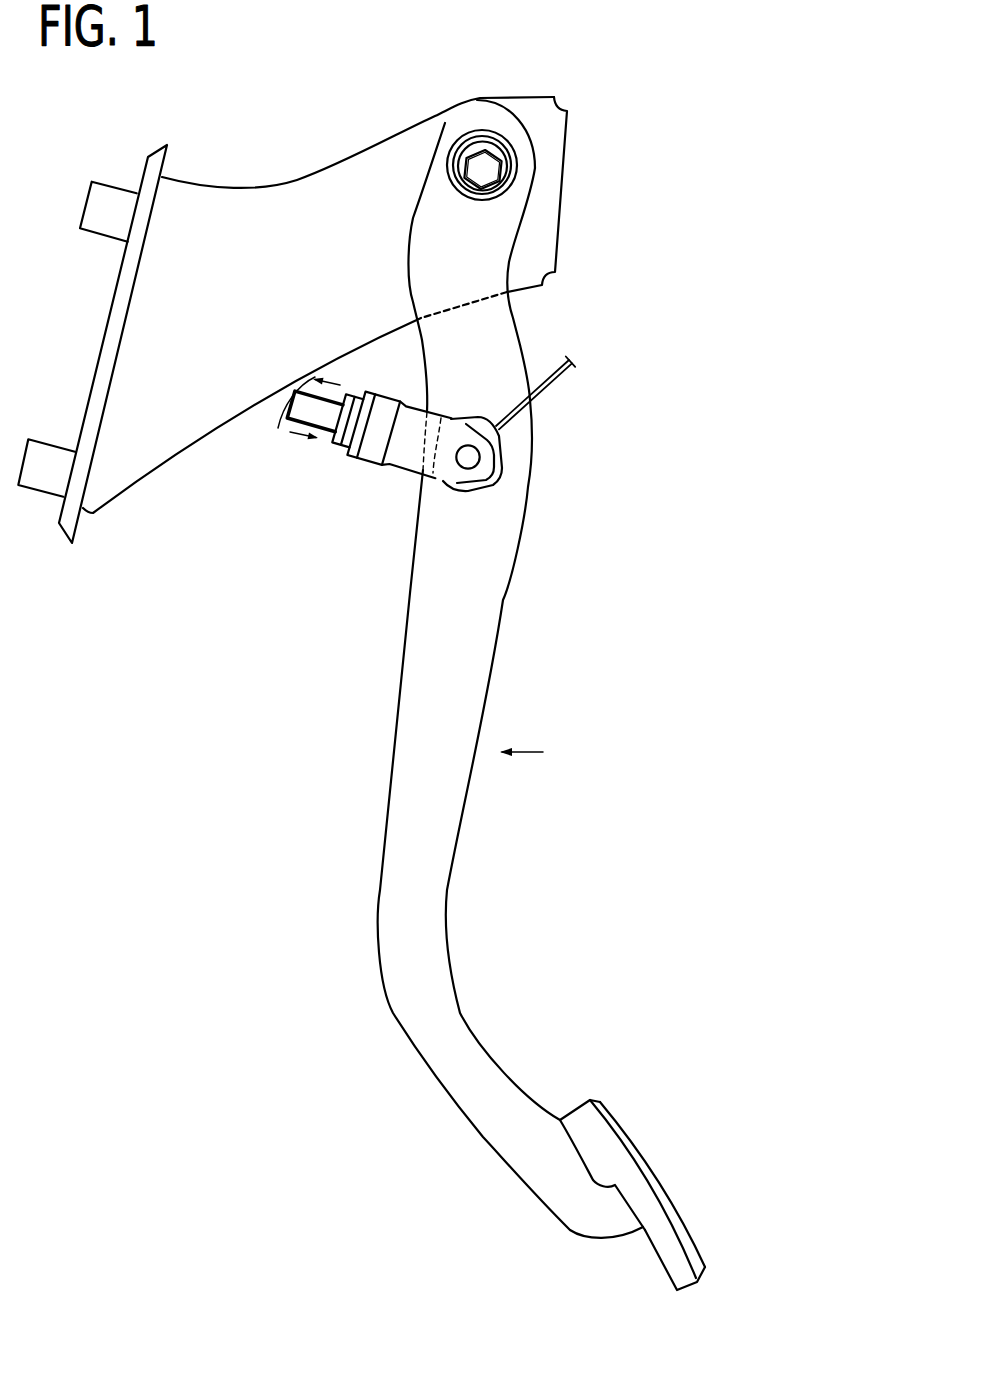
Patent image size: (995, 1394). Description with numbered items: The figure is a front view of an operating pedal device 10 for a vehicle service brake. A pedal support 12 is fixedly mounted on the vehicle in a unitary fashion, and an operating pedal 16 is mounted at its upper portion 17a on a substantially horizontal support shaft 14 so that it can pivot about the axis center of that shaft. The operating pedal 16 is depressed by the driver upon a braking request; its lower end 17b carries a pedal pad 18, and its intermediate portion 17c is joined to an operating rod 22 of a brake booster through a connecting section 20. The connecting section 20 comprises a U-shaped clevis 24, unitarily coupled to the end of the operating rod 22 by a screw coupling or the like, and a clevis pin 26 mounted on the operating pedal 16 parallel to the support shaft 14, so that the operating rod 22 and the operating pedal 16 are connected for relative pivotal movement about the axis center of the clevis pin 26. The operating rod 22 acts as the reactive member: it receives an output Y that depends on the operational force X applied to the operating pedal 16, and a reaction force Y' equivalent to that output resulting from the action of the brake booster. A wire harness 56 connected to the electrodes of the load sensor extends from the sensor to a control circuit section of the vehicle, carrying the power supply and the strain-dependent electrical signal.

The operating pedal device 10 is at (713, 125).
The pedal support 12 is at (268, 202).
The support shaft 14 is at (490, 170).
The operating pedal 16 is at (392, 850).
The upper portion 17a is at (505, 218).
The lower end 17b is at (585, 1217).
The intermediate portion 17c is at (443, 508).
The pedal pad 18 is at (628, 1157).
The connecting section 20 is at (490, 519).
The operating rod 22 is at (312, 410).
The U-shaped clevis 24 is at (402, 453).
The clevis pin 26 is at (470, 456).
The wire harness 56 is at (560, 383).